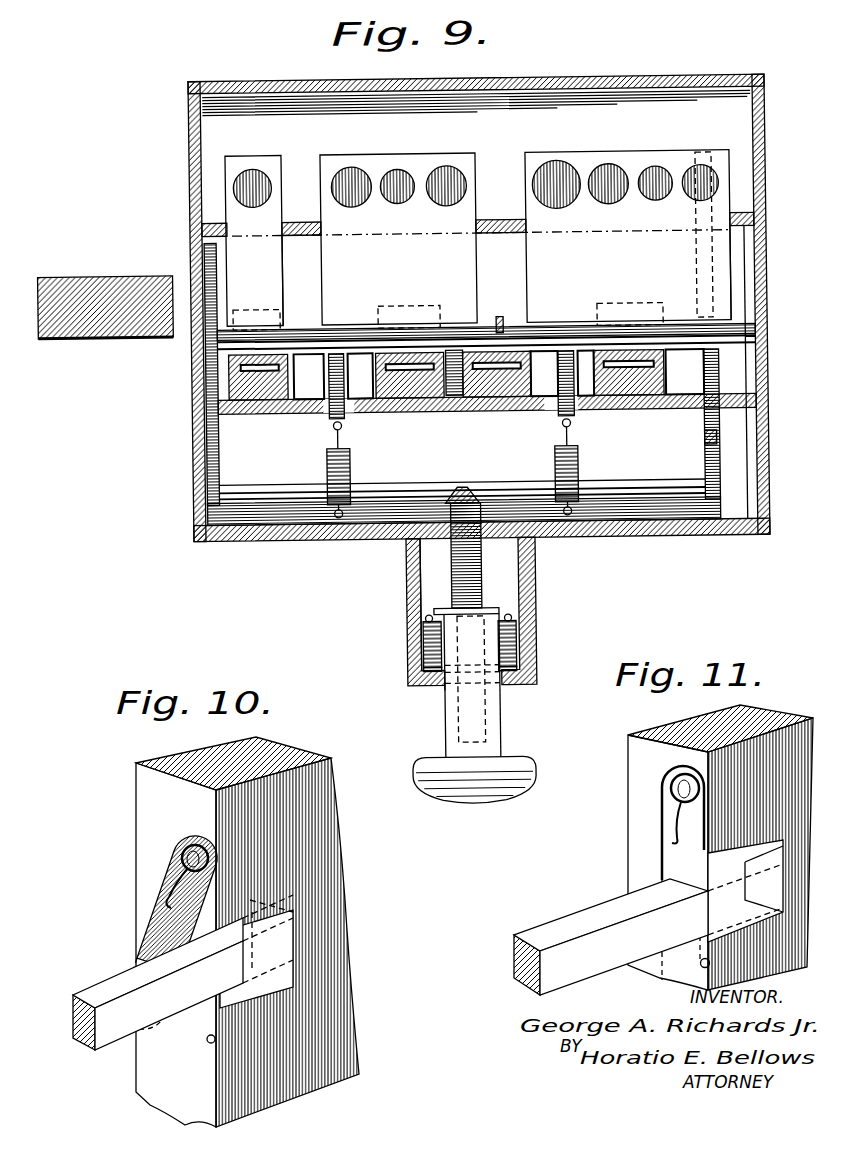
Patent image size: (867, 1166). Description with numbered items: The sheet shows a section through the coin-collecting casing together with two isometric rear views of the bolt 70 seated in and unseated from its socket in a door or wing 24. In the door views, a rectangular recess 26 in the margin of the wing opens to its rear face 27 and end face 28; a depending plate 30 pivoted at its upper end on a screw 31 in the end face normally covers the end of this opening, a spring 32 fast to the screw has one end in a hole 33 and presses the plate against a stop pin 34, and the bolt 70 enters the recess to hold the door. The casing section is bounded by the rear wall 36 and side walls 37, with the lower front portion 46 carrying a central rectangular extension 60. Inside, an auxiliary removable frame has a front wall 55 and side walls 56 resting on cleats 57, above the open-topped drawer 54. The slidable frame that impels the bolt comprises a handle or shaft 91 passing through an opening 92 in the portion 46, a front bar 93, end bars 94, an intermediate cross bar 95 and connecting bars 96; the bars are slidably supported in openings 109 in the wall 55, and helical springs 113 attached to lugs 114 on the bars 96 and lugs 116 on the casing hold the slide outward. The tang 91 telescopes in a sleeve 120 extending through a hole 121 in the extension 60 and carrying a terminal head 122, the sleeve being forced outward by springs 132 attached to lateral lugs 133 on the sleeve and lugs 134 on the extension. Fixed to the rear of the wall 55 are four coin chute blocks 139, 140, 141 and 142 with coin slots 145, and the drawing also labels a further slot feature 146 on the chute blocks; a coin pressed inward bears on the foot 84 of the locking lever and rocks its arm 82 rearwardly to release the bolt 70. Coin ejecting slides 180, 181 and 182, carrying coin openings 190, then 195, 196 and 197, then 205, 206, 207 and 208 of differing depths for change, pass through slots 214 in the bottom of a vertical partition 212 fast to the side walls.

In FIG. 9, the rear wall 36 is at (590, 78).
In FIG. 9, the side walls 37 is at (191, 148).
In FIG. 9, the front wall portion 46 is at (612, 538).
In FIG. 9, the side walls of auxiliary frame 56 is at (755, 345).
In FIG. 9, the cleats 57 is at (755, 455).
In FIG. 9, the drawer 54 is at (440, 482).
In FIG. 9, the front wall of auxiliary frame 55 is at (497, 411).
In FIG. 9, the rectangular extension 60 is at (532, 578).
In FIG. 9, the lever arm 82 is at (499, 317).
In FIG. 9, the foot of locking lever 84 is at (525, 338).
In FIG. 9, the handle or shaft 91 is at (445, 560).
In FIG. 9, the opening 92 is at (472, 538).
In FIG. 9, the front bar 93 is at (235, 525).
In FIG. 9, the end bars 94 is at (208, 440).
In FIG. 9, the intermediate cross bar 95 is at (320, 328).
In FIG. 9, the connecting bars 96 is at (330, 420).
In FIG. 9, the openings 109 is at (340, 405).
In FIG. 9, the helical springs 113 is at (326, 470).
In FIG. 9, the lugs 114 is at (345, 430).
In FIG. 9, the lugs 116 is at (336, 517).
In FIG. 9, the sleeve 120 is at (497, 700).
In FIG. 9, the hole 121 is at (440, 686).
In FIG. 9, the terminal head 122 is at (470, 790).
In FIG. 9, the helical springs 132 is at (420, 640).
In FIG. 9, the lateral lugs 133 is at (422, 617).
In FIG. 9, the lugs 134 is at (419, 669).
In FIG. 9, the coin chute block 139 is at (228, 370).
In FIG. 9, the coin chute block 140 is at (392, 352).
In FIG. 9, the coin chute block 141 is at (476, 352).
In FIG. 9, the coin chute block 142 is at (568, 340).
In FIG. 9, the coin slots 145 is at (412, 369).
In FIG. 9, the slot 146 is at (628, 369).
In FIG. 9, the coin ejecting slide 180 is at (232, 275).
In FIG. 9, the coin ejecting slide 181 is at (332, 258).
In FIG. 9, the coin ejecting slide 182 is at (540, 247).
In FIG. 9, the coin opening 190 is at (254, 166).
In FIG. 9, the coin opening 195 is at (355, 165).
In FIG. 9, the coin opening 196 is at (402, 169).
In FIG. 9, the coin opening 197 is at (450, 166).
In FIG. 9, the coin opening 205 is at (560, 162).
In FIG. 9, the coin opening 206 is at (610, 165).
In FIG. 9, the coin opening 207 is at (657, 168).
In FIG. 9, the coin opening 208 is at (706, 166).
In FIG. 9, the vertical partition 212 is at (306, 231).
In FIG. 9, the slots 214 is at (745, 216).
In FIG. 10, the door or wing 24 is at (200, 752).
In FIG. 11, the door or wing 24 is at (700, 722).
In FIG. 10, the rectangular recess 26 is at (290, 950).
In FIG. 11, the rectangular recess 26 is at (770, 860).
In FIG. 10, the rear face 27 is at (325, 853).
In FIG. 11, the rear face 27 is at (760, 952).
In FIG. 10, the end face 28 is at (147, 790).
In FIG. 11, the end face 28 is at (640, 820).
In FIG. 10, the depending plate 30 is at (160, 935).
In FIG. 11, the depending plate 30 is at (660, 855).
In FIG. 10, the screw 31 is at (182, 852).
In FIG. 11, the screw 31 is at (671, 782).
In FIG. 10, the spring 32 is at (172, 886).
In FIG. 11, the spring 32 is at (674, 815).
In FIG. 10, the hole 33 is at (168, 908).
In FIG. 11, the hole 33 is at (672, 840).
In FIG. 10, the stop pin 34 is at (216, 1041).
In FIG. 11, the stop pin 34 is at (710, 962).
In FIG. 10, the bolt 70 is at (100, 1003).
In FIG. 11, the bolt 70 is at (590, 910).